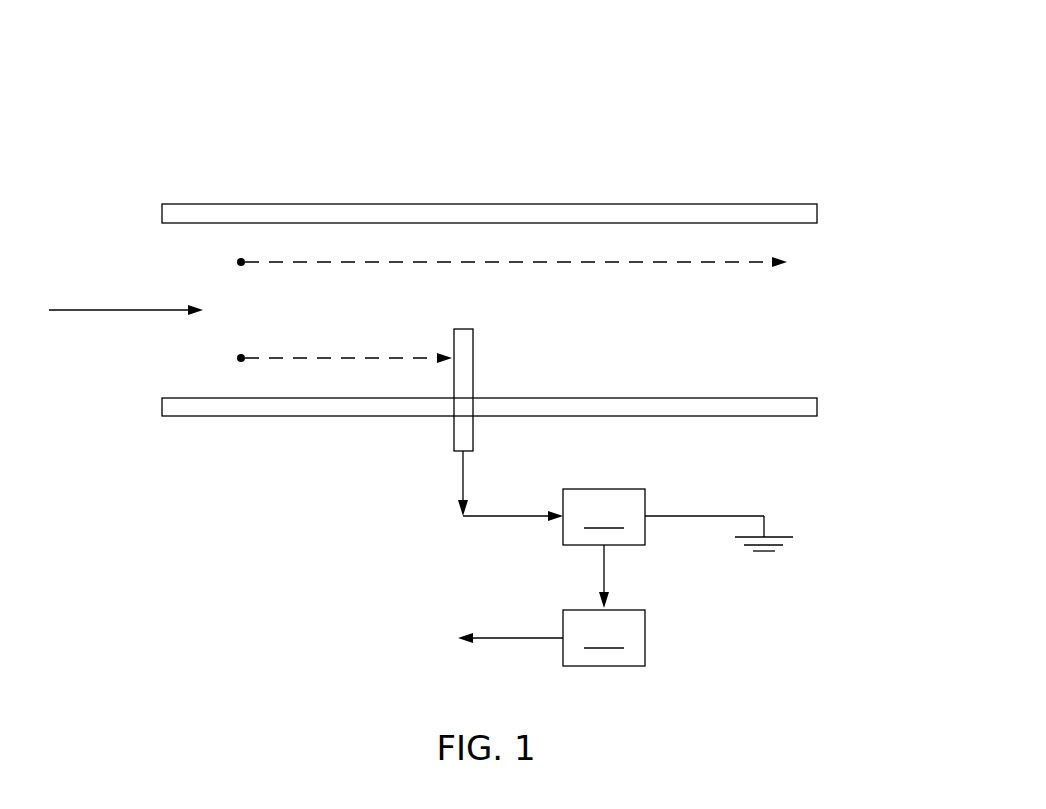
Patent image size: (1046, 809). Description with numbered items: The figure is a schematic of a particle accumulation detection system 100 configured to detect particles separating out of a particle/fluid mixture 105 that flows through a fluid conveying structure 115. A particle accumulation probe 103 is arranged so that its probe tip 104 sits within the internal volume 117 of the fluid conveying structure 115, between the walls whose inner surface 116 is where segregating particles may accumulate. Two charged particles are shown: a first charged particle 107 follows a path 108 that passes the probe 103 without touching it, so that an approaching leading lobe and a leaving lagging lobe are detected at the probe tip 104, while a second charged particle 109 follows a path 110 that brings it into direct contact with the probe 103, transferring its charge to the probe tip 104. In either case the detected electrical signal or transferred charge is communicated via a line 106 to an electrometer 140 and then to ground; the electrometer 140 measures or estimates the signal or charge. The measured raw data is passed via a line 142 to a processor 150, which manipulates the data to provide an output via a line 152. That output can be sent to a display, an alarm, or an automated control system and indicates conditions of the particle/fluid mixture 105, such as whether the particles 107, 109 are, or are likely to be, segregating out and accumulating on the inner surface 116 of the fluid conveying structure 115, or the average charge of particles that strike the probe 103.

The particle accumulation detection system 100 is at (638, 42).
The particle accumulation probe 103 is at (474, 437).
The probe tip 104 is at (474, 342).
The particle/fluid mixture 105 is at (80, 308).
The line 106 is at (500, 518).
The charged particle 107 is at (237, 262).
The path 108 is at (670, 265).
The charged particle 109 is at (237, 358).
The path 110 is at (360, 358).
The fluid conveying structure 115 is at (597, 204).
The inner surface 116 is at (779, 398).
The internal volume 117 is at (684, 379).
The electrometer 140 is at (678, 520).
The line 142 is at (607, 572).
The processor 150 is at (604, 638).
The line 152 is at (518, 641).